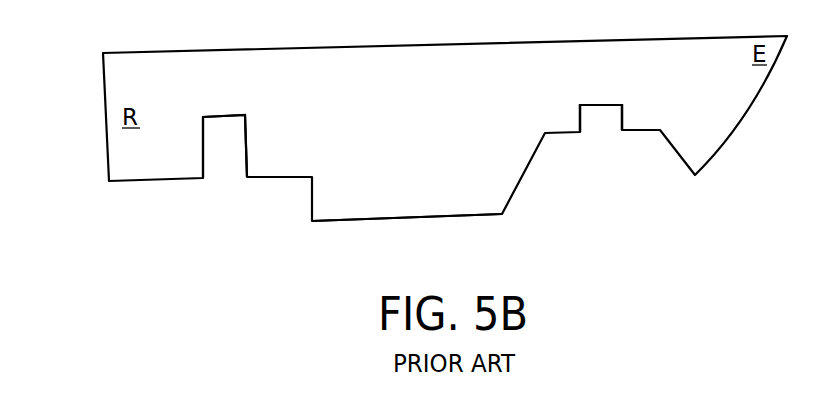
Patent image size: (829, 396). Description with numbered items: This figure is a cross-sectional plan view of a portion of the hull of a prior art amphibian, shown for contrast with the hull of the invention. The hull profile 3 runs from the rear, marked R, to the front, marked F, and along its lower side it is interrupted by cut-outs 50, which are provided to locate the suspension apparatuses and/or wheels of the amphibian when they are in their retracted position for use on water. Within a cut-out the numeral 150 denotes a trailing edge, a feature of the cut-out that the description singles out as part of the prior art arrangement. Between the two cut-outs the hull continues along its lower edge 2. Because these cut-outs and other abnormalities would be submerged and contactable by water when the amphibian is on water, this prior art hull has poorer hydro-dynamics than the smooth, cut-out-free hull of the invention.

The prior art bar profile 3 is at (95, 72).
The cut-out 50 is at (228, 176).
The trailing edge 150 is at (584, 127).
The bottom edge 2 is at (402, 222).